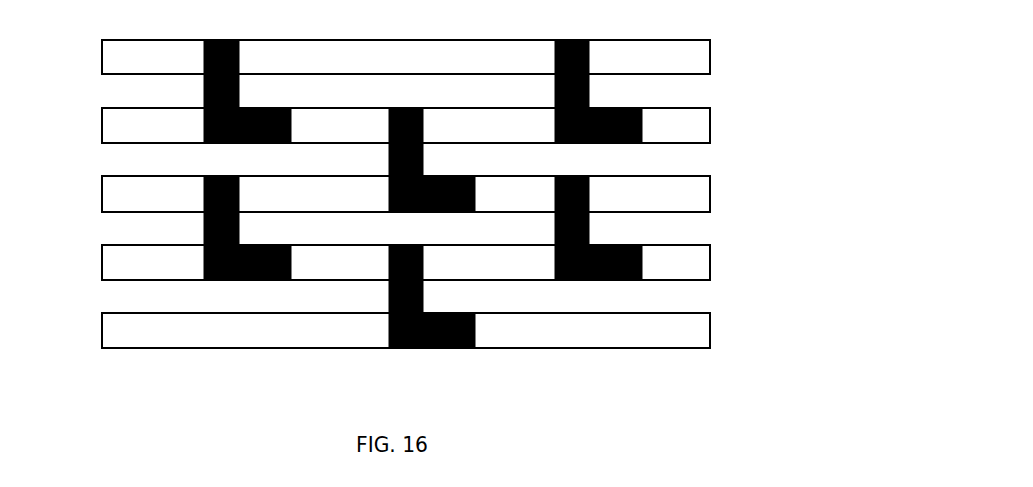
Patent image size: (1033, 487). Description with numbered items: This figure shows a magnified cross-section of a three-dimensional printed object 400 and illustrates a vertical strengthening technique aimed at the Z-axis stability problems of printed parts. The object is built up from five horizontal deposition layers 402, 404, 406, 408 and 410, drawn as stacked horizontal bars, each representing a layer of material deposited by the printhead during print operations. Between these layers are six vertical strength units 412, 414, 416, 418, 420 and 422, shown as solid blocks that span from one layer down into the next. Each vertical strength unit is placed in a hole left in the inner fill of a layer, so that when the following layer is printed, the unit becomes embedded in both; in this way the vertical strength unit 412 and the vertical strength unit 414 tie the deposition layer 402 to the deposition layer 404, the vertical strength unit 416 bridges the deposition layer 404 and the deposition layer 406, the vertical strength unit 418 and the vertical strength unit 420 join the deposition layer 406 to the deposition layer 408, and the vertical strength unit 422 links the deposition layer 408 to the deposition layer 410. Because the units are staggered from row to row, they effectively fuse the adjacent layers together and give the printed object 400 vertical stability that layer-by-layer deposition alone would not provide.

The 3D printed object 400 is at (830, 188).
The deposition layer 402 is at (102, 57).
The deposition layer 404 is at (710, 125).
The deposition layer 406 is at (102, 195).
The deposition layer 408 is at (710, 262).
The deposition layer 410 is at (102, 330).
The vertical strength unit 412 is at (235, 40).
The vertical strength unit 414 is at (580, 40).
The vertical strength unit 416 is at (412, 108).
The vertical strength unit 418 is at (220, 280).
The vertical strength unit 420 is at (589, 280).
The vertical strength unit 422 is at (443, 348).